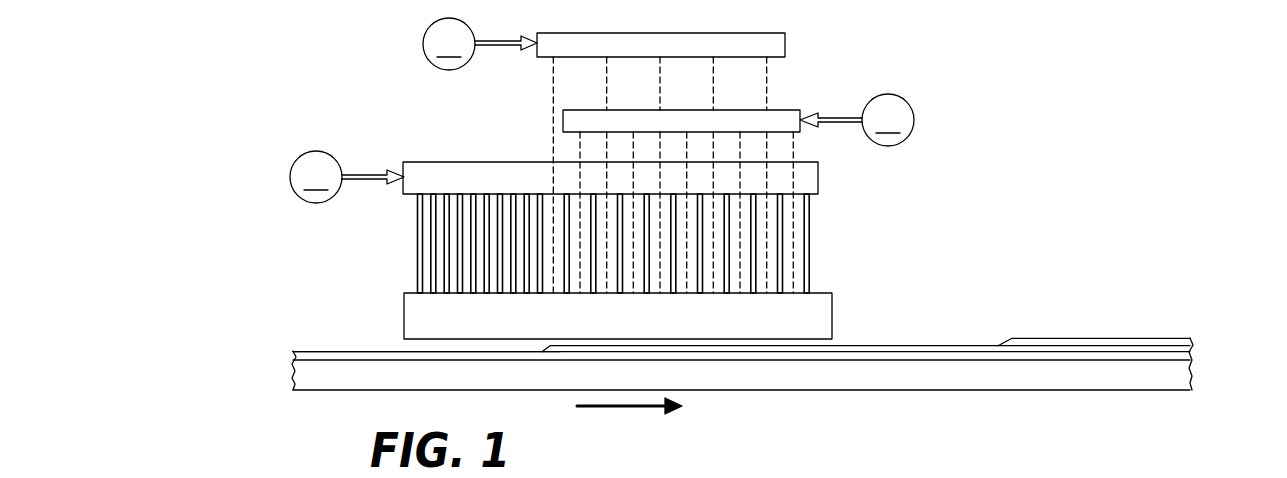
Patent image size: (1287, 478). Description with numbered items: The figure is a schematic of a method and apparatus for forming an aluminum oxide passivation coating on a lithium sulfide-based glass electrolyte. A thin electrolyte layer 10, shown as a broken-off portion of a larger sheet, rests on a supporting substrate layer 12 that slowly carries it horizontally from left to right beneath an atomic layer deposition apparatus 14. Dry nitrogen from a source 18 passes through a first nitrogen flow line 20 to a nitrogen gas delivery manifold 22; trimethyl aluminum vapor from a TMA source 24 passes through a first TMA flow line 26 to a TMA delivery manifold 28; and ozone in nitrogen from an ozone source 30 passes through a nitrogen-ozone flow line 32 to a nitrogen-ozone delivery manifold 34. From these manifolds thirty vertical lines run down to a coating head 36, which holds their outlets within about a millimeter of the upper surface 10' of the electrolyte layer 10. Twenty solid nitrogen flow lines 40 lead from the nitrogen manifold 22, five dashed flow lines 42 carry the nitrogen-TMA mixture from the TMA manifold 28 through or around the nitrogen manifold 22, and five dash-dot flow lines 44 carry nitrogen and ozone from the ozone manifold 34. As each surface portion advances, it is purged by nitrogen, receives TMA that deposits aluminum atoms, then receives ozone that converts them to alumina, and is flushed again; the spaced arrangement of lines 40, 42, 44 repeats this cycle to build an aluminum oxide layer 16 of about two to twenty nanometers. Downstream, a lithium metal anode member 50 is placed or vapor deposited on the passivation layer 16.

The electrolyte layer 10 is at (698, 337).
The upper surface 10' is at (426, 310).
The supporting substrate layer 12 is at (326, 390).
The atomic layer deposition apparatus 14 is at (917, 212).
The aluminum oxide layer 16 is at (958, 345).
The nitrogen source 18 is at (316, 177).
The first nitrogen flow line 20 is at (357, 182).
The nitrogen gas delivery manifold 22 is at (425, 160).
The TMA source 24 is at (449, 44).
The first TMA flow line 26 is at (490, 48).
The TMA delivery manifold 28 is at (785, 42).
The ozone source 30 is at (888, 120).
The nitrogen-ozone flow line 32 is at (834, 115).
The nitrogen-ozone delivery manifold 34 is at (790, 110).
The coating head 36 is at (832, 318).
The nitrogen flow lines 40 is at (470, 227).
The TMA flow lines 42 is at (607, 75).
The nitrogen-ozone flow lines 44 is at (735, 148).
The lithium metal anode member 50 is at (1066, 338).